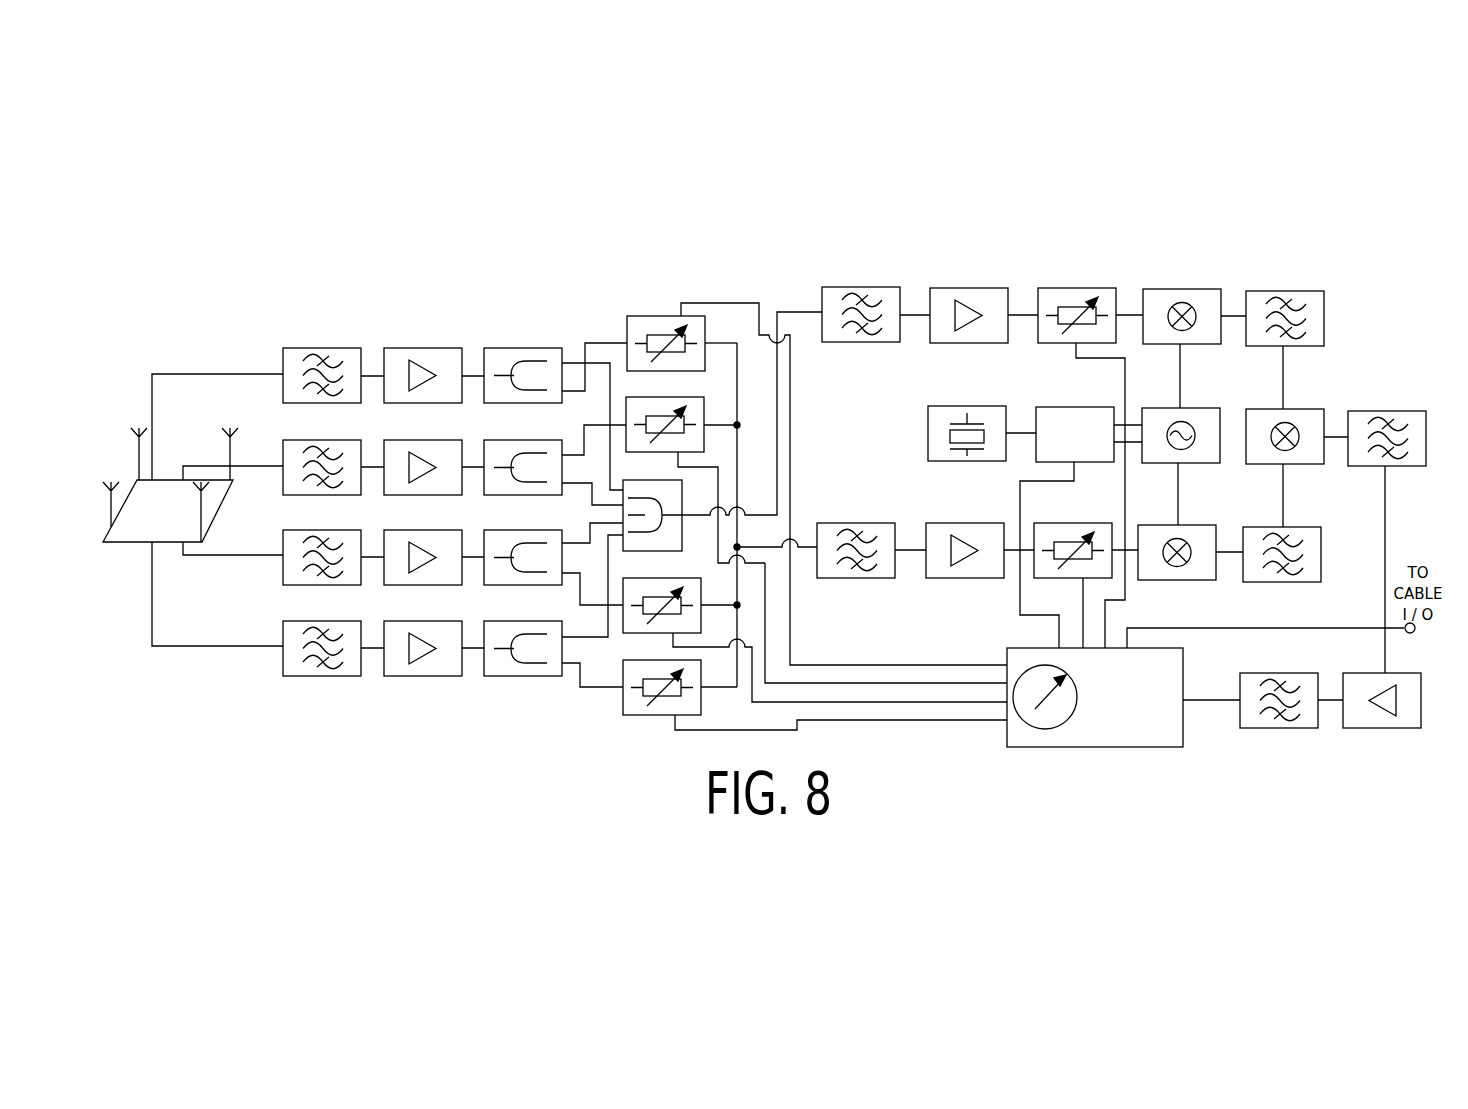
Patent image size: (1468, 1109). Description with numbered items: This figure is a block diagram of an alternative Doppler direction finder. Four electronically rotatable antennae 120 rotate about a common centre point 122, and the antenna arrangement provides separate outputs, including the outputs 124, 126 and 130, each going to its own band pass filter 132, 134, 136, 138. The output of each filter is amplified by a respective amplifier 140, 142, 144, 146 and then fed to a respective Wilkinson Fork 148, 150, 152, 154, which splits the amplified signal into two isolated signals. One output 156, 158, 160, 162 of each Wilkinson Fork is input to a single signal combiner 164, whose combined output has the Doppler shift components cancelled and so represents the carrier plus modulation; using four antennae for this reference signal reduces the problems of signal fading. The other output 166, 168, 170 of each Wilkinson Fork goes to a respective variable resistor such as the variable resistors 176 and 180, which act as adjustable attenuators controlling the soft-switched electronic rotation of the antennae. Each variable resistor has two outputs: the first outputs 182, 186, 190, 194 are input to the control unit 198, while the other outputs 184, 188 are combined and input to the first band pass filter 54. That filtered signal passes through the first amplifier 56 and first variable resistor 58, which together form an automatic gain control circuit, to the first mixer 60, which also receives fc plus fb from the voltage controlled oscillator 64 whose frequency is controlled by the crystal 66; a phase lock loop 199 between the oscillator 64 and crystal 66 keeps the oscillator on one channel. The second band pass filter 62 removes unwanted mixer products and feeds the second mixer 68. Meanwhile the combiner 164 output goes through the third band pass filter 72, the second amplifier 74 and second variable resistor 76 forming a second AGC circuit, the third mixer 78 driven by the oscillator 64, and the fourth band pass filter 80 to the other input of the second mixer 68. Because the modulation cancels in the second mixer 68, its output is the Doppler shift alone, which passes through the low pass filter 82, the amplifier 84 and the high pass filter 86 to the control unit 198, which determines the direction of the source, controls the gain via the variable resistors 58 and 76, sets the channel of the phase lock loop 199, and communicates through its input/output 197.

The electronically rotatable antennae 120 is at (200, 523).
The common centre point 122 is at (168, 508).
The antenna output 124 is at (257, 554).
The antenna output 126 is at (257, 468).
The antenna output 130 is at (228, 372).
The band pass filter 132 is at (328, 678).
The band pass filter 134 is at (333, 586).
The band pass filter 136 is at (338, 440).
The band-pass filter 138 is at (338, 347).
The amplifier 140 is at (428, 678).
The amplifier 142 is at (428, 586).
The amplifier 144 is at (436, 440).
The amplifier 146 is at (440, 347).
The Wilkinson Fork 148 is at (503, 678).
The Wilkinson Fork 150 is at (503, 586).
The Wilkinson Fork 152 is at (512, 440).
The Wilkinson Fork 154 is at (512, 347).
The Wilkinson Fork output 156 is at (598, 638).
The Wilkinson Fork output 158 is at (580, 546).
The Wilkinson Fork output 160 is at (578, 455).
The Wilkinson Fork output 162 is at (578, 364).
The signal combiner 164 is at (662, 480).
The Wilkinson Fork output 166 is at (590, 689).
The Wilkinson Fork output 168 is at (580, 592).
The Wilkinson Fork output 170 is at (588, 494).
The variable resistor 176 is at (662, 578).
The variable resistor 180 is at (656, 316).
The variable resistor first output 182 is at (712, 697).
The variable resistor other output 184 is at (963, 723).
The variable resistor first output 186 is at (888, 705).
The variable resistor other output 188 is at (713, 600).
The variable resistor first output 190 is at (720, 424).
The variable resistor first output 194 is at (727, 343).
The input/output 197 is at (1333, 627).
The control unit 198 is at (1155, 749).
The phase lock loop 199 is at (1092, 406).
The first band pass filter 54 is at (872, 523).
The first amplifier 56 is at (980, 523).
The first variable resistor 58 is at (1090, 523).
The first mixer 60 is at (1190, 525).
The second band pass filter 62 is at (1297, 527).
The voltage controlled oscillator 64 is at (1194, 408).
The crystal 66 is at (980, 406).
The second mixer 68 is at (1300, 408).
The third band pass filter 72 is at (872, 287).
The second amplifier 74 is at (982, 288).
The second variable resistor 76 is at (1092, 288).
The third mixer 78 is at (1192, 289).
The fourth band pass filter 80 is at (1300, 291).
The low pass filter 82 is at (1400, 410).
The amplifier 84 is at (1390, 729).
The high pass filter 86 is at (1291, 729).